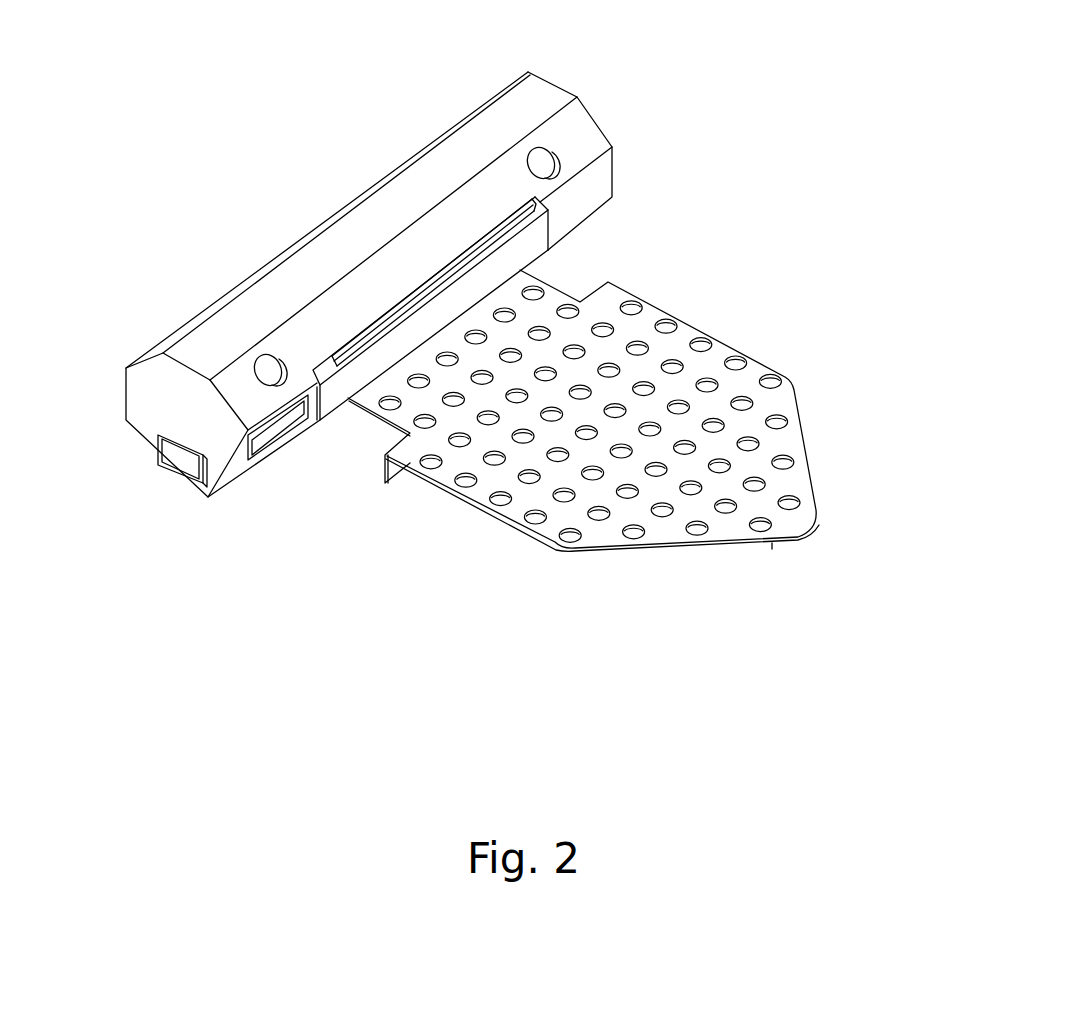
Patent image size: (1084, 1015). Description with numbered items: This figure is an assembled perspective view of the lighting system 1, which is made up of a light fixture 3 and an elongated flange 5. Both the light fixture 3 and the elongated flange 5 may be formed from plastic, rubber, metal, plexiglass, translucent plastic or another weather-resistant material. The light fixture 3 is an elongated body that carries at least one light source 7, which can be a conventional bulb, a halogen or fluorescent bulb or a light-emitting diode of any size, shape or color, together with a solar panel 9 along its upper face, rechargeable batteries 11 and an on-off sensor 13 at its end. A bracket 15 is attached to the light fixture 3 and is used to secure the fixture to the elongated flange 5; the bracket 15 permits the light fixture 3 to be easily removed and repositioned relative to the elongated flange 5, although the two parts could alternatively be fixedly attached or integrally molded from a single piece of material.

The lighting system 1 is at (657, 84).
The light fixture 3 is at (173, 407).
The elongated flange 5 is at (743, 380).
The light source 7 is at (555, 152).
The solar panel 9 is at (323, 247).
The rechargeable batteries 11 is at (268, 437).
The on-off sensor 13 is at (175, 458).
The bracket 15 is at (374, 352).